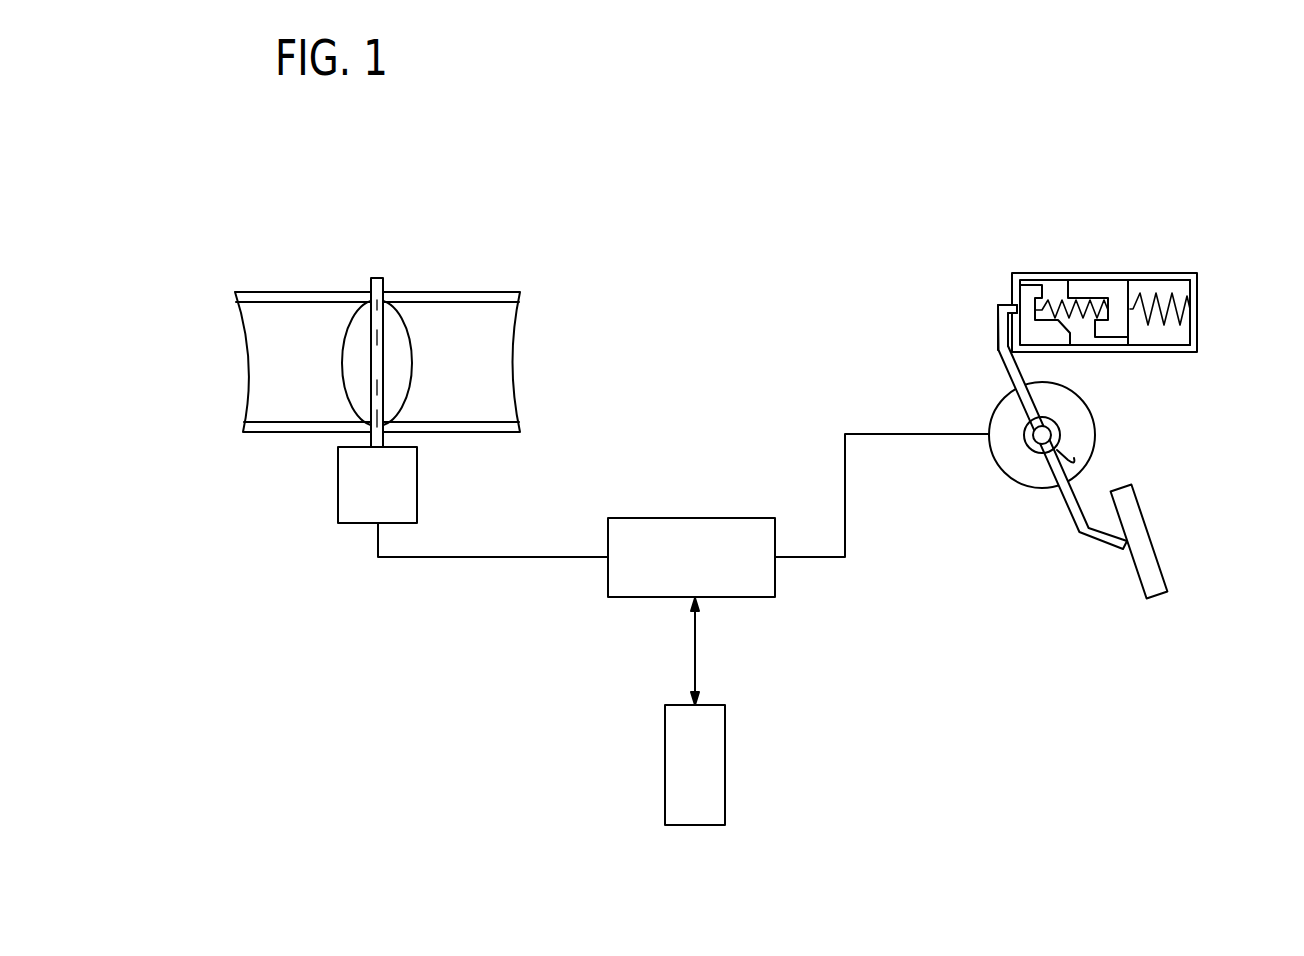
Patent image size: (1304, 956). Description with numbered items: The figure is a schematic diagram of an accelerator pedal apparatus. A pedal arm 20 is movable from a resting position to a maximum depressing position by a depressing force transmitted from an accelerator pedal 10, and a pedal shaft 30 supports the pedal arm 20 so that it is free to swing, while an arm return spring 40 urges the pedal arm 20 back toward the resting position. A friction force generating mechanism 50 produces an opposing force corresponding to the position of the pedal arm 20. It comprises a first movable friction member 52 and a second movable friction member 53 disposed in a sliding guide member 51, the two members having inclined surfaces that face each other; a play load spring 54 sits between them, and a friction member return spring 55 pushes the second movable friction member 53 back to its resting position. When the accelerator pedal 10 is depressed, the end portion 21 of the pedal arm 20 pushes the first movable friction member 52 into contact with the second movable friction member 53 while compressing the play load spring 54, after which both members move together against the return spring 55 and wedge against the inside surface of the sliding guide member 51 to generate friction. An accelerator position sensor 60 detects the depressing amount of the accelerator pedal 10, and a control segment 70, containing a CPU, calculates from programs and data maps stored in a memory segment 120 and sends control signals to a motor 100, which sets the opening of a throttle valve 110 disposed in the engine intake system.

The accelerator pedal 10 is at (1153, 547).
The pedal arm 20 is at (1072, 523).
The end portion of the pedal arm 21 is at (1012, 296).
The pedal shaft 30 is at (1051, 437).
The arm return spring 40 is at (1067, 422).
The friction force generating mechanism 50 is at (1140, 273).
The sliding guide member 51 is at (1182, 273).
The first movable friction member 52 is at (1028, 285).
The second movable friction member 53 is at (1090, 280).
The play load spring 54 is at (1052, 303).
The friction member return spring 55 is at (1180, 303).
The accelerator position sensor 60 is at (995, 408).
The control segment 70 is at (708, 518).
The motor 100 is at (417, 490).
The throttle valve 110 is at (407, 327).
The memory segment 120 is at (725, 770).